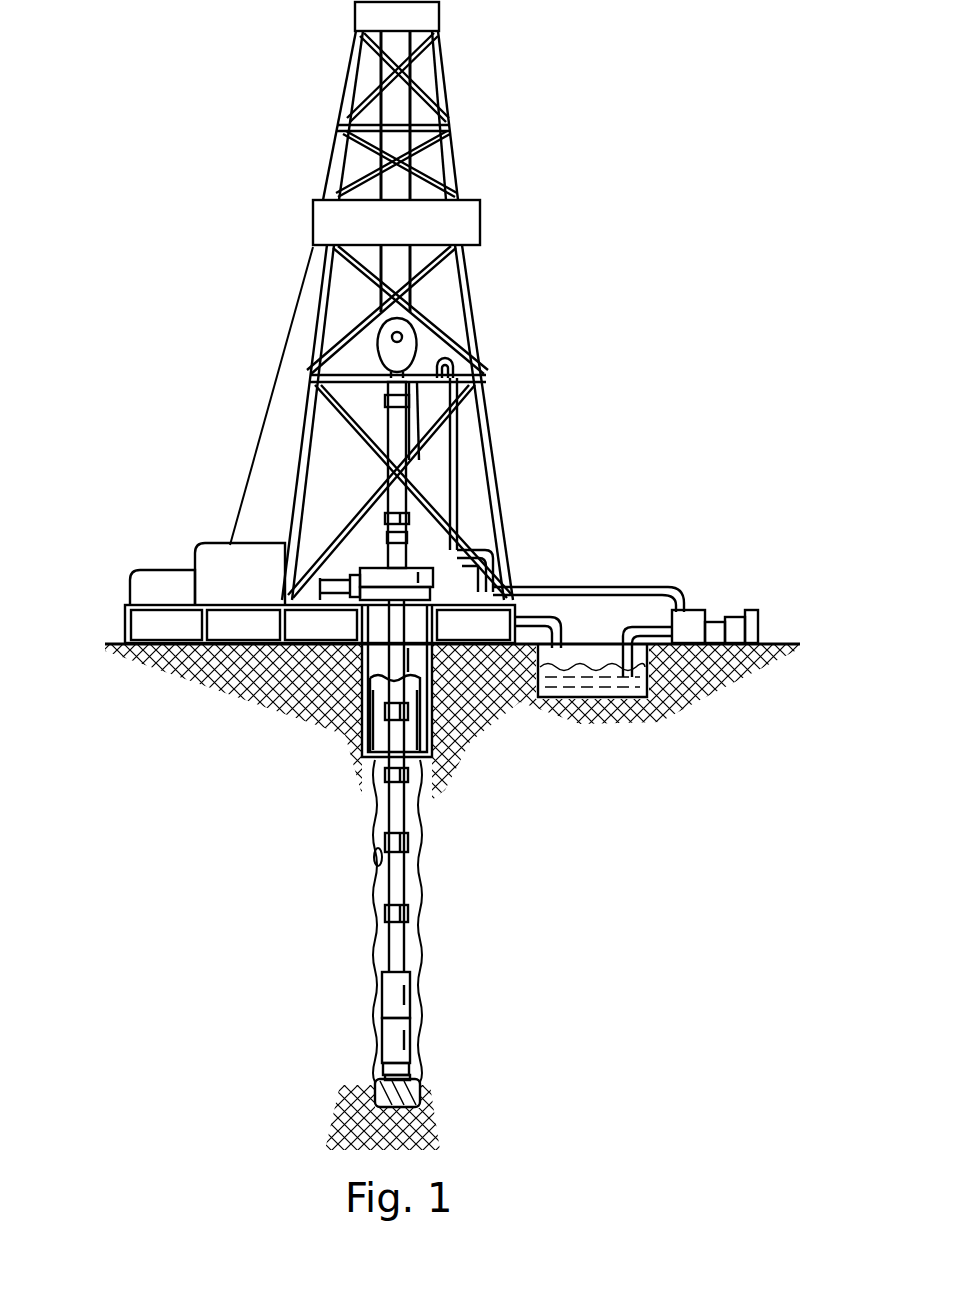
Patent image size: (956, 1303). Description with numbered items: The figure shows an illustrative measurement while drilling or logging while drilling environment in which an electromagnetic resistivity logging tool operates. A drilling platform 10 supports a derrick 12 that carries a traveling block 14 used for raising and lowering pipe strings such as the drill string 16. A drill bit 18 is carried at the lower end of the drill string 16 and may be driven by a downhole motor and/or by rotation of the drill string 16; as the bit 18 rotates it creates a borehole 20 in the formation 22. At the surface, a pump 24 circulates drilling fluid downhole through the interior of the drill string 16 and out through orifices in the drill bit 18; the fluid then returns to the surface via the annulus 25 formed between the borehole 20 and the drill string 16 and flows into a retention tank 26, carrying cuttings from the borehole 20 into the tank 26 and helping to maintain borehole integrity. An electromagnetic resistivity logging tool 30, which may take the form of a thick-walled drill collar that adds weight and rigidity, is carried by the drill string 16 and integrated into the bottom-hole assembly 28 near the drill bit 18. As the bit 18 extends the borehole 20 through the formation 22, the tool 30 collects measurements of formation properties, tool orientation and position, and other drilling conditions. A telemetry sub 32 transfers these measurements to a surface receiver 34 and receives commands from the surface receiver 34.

The drilling platform 10 is at (126, 616).
The derrick 12 is at (447, 114).
The traveling block 14 is at (418, 345).
The drill string 16 is at (407, 808).
The drill bit 18 is at (418, 1078).
The borehole 20 is at (373, 850).
The formation 22 is at (590, 585).
The pump 24 is at (690, 610).
The annulus 25 is at (378, 822).
The retention tank 26 is at (575, 670).
The bottom-hole assembly 28 is at (372, 1032).
The electromagnetic resistivity logging tool 30 is at (383, 1040).
The telemetry sub 32 is at (411, 990).
The surface receiver 34 is at (408, 520).